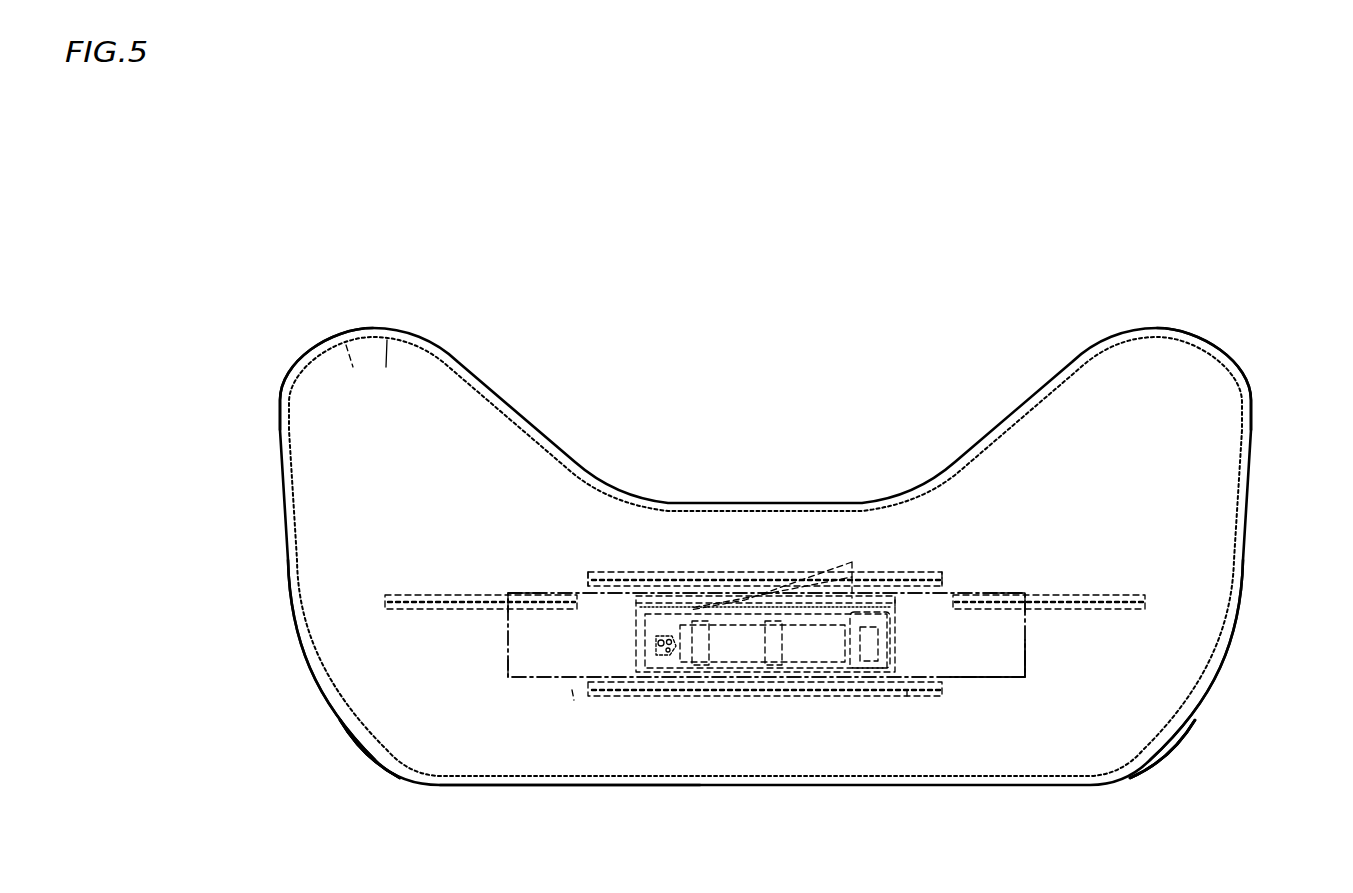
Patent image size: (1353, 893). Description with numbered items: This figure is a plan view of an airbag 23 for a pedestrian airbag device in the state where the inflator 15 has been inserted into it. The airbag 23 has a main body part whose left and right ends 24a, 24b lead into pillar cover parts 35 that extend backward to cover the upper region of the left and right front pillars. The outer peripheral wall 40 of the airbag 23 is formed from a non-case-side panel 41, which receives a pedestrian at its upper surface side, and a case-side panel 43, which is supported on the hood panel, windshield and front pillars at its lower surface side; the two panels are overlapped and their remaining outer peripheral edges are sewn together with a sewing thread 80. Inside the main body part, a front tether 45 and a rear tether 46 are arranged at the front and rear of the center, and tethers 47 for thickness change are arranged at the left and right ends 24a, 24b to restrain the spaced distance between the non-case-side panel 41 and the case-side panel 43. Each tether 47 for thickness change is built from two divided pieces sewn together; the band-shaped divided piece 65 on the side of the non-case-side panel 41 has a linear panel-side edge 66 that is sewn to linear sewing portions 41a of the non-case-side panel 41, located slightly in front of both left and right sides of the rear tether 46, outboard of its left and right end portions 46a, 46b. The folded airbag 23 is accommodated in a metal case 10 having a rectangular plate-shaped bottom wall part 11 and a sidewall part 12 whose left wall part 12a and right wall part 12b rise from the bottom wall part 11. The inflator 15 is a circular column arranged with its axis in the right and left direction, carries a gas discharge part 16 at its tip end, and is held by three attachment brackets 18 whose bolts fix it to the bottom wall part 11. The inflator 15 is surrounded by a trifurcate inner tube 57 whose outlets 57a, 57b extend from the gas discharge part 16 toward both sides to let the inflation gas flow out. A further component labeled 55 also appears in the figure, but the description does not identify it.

The airbag 23 is at (290, 302).
The sewing thread 80 is at (1207, 353).
The pillar cover parts 35 is at (318, 430).
The outer peripheral wall 40 is at (426, 221).
The case-side panel 43 is at (353, 367).
The non-case-side panel 41 is at (386, 367).
The sewing portions 41a is at (395, 604).
The right end of main body part 24b is at (307, 698).
The left end of main body part 24a is at (1218, 710).
The tethers for thickness change 47 is at (377, 736).
The divided piece 65 is at (767, 749).
The panel-side edge 66 is at (767, 749).
The right wall part 12b is at (440, 786).
The rear tether 46 is at (653, 560).
The right end portion of rear tether 46b is at (583, 560).
The left end portion of rear tether 46a is at (943, 570).
The front tether 45 is at (675, 698).
The case 10 is at (983, 667).
The bottom wall part 11 is at (766, 635).
The sidewall part 12 is at (1027, 640).
The left wall part 12a is at (987, 658).
The outlet 57a is at (572, 690).
The gas discharge part 16 is at (658, 650).
The inflator 15 is at (735, 657).
The attachment brackets 18 is at (848, 676).
The inner tube 57 is at (836, 565).
The outlet 57b is at (852, 580).
The circuit board 55 is at (903, 595).